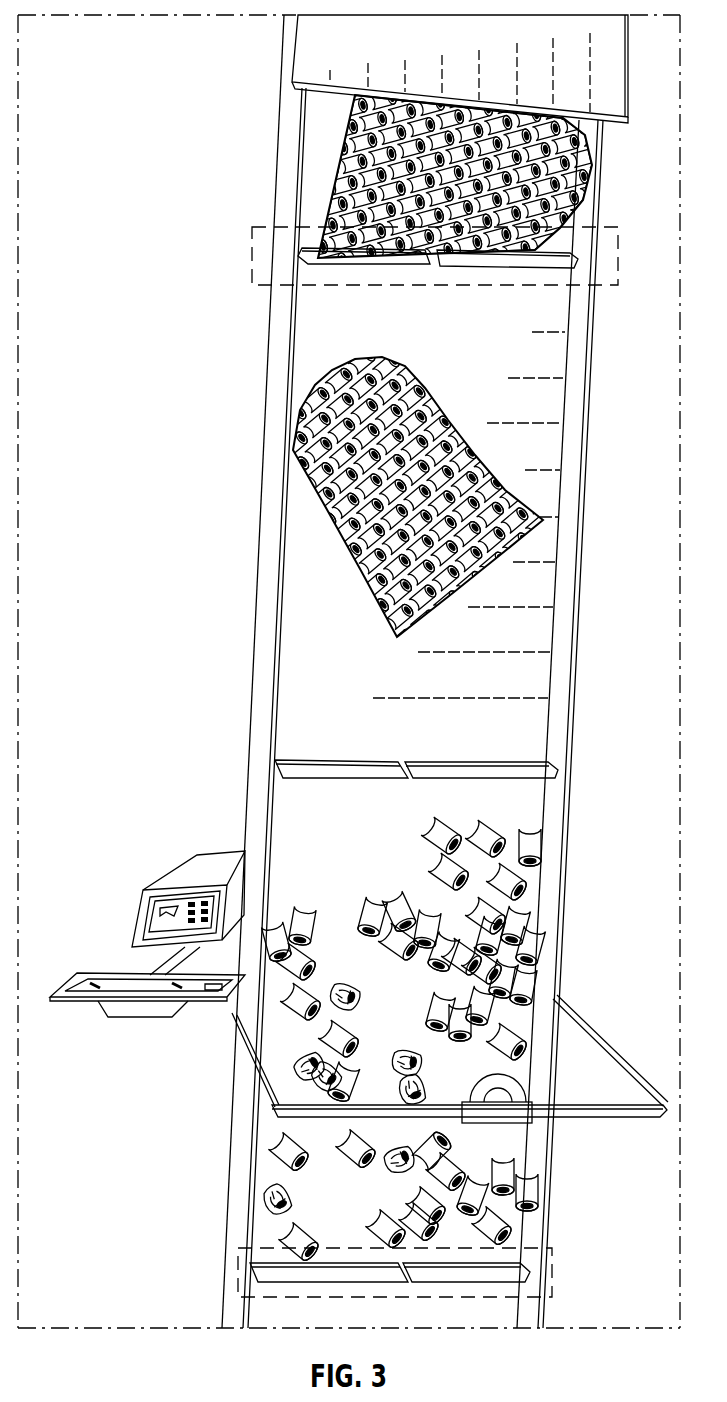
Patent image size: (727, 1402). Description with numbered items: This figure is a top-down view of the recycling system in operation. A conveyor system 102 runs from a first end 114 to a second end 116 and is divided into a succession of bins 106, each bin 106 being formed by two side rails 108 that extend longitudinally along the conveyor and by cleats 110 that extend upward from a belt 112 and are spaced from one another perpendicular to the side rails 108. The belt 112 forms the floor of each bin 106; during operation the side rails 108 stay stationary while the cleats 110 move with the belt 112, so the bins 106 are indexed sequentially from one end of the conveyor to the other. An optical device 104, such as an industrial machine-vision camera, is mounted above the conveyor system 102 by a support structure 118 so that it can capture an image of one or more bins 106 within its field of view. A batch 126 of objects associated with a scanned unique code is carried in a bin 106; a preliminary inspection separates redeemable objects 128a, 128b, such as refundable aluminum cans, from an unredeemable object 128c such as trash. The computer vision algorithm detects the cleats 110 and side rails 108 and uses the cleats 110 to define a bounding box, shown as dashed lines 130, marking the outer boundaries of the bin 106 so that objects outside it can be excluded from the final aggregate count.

The conveyor system 102 is at (266, 382).
The optical device 104 is at (510, 1103).
The bin 106 is at (320, 567).
The side rail 108 is at (262, 632).
The cleat 110 is at (335, 768).
The belt 112 is at (525, 363).
The first end 114 is at (293, 106).
The second end 116 is at (234, 1310).
The support structure 118 is at (625, 1117).
The batch 126 is at (365, 878).
The redeemable object 128a is at (518, 912).
The redeemable object 128b is at (535, 947).
The unredeemable object 128c is at (318, 1067).
The dashed lines 130 is at (578, 775).